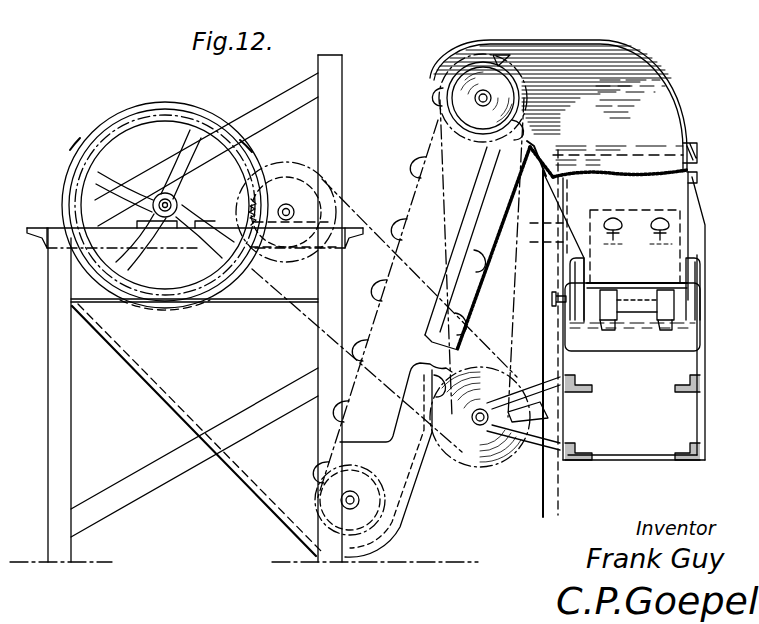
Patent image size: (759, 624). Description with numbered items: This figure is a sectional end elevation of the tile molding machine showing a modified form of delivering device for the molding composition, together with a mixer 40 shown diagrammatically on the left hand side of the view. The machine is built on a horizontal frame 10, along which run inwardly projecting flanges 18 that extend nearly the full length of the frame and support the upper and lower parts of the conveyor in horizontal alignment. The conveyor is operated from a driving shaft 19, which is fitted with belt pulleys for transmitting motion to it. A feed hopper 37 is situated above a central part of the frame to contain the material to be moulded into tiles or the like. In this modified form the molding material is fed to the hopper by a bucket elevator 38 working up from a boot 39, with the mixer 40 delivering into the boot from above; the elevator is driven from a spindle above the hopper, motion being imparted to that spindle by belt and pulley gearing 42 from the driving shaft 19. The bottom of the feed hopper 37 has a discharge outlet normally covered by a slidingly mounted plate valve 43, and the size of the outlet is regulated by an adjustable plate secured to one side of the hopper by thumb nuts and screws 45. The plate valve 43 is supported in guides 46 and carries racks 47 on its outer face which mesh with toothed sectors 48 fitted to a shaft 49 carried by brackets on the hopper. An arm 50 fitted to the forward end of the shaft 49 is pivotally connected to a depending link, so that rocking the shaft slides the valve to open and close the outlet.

The horizontal frame 10 is at (702, 405).
The inwardly projecting flanges 18 is at (692, 384).
The driving shaft 19 is at (470, 437).
The feed hopper 37 is at (563, 108).
The bucket elevator 38 is at (416, 160).
The boot 39 is at (315, 488).
The mixer 40 is at (64, 200).
The belt and pulley gearing 42 is at (510, 322).
The plate valve 43 is at (632, 317).
The thumb nuts and screws 45 is at (635, 246).
The guides 46 is at (586, 262).
The racks 47 is at (668, 328).
The toothed sectors 48 is at (650, 283).
The shaft 49 is at (627, 320).
The arm 50 is at (552, 298).